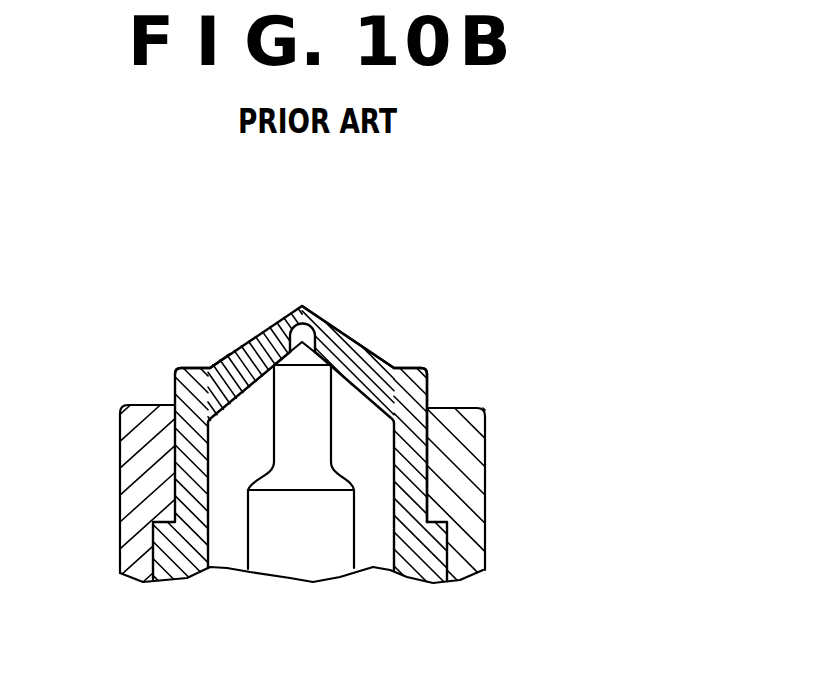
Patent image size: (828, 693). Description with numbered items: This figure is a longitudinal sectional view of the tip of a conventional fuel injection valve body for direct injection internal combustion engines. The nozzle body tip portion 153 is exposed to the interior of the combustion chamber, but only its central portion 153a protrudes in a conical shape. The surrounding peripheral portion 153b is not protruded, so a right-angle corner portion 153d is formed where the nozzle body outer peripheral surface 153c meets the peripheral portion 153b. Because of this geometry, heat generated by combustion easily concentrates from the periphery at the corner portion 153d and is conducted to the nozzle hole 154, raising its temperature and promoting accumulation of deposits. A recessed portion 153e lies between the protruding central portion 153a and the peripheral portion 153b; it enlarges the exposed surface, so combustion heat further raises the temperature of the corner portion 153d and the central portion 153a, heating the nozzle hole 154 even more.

The nozzle body tip portion 153 is at (358, 343).
The central portion 153a is at (340, 330).
The peripheral portion 153b is at (410, 367).
The nozzle body outer peripheral surface 153c is at (428, 395).
The corner portion 153d is at (428, 369).
The recessed portion 153e is at (212, 367).
The nozzle hole 154 is at (306, 306).